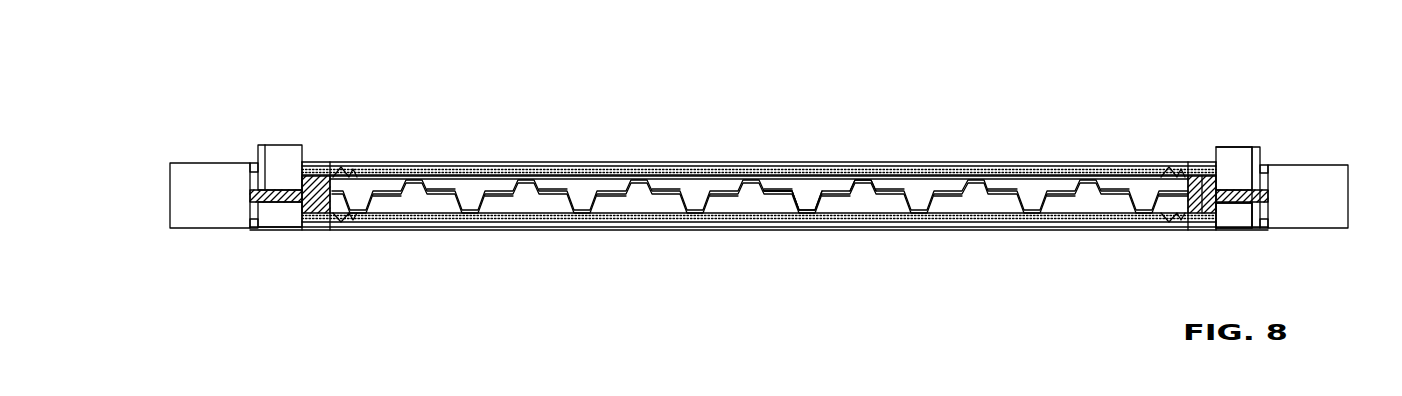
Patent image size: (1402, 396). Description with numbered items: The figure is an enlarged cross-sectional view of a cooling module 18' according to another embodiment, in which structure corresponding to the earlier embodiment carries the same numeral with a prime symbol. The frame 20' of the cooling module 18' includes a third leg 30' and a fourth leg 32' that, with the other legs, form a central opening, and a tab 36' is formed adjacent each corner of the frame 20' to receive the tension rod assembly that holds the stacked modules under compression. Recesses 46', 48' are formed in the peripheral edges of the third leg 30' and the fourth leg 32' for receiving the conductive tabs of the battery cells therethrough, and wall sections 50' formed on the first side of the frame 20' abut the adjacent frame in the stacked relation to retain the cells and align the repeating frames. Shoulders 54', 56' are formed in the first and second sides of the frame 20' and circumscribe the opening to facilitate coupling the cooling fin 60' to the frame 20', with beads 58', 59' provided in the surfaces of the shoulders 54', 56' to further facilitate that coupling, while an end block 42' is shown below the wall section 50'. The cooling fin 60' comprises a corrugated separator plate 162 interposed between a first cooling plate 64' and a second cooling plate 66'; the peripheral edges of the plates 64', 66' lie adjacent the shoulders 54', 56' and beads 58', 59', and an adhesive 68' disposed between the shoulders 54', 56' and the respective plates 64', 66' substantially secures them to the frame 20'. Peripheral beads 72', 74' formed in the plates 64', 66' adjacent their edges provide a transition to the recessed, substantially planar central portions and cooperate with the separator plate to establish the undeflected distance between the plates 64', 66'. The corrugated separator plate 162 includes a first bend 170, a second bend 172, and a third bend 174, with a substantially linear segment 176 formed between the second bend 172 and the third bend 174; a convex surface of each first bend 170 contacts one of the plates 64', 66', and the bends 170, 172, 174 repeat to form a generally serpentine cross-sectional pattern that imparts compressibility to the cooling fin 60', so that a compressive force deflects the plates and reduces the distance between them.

The cooling module 18' is at (810, 131).
The frame 20' is at (1236, 117).
The third leg 30' is at (240, 199).
The fourth leg 32' is at (1280, 199).
The tab 36' is at (769, 172).
The lower end block 42' is at (1236, 237).
The recess 46' is at (769, 151).
The recess 48' is at (762, 249).
The wall section 50' is at (772, 164).
The shoulder 54' is at (1202, 183).
The shoulder 56' is at (1203, 227).
The bead 58' is at (1171, 152).
The bead 59' is at (1168, 245).
The cooling fin 60' is at (759, 143).
The first cooling plate 64' is at (759, 152).
The second cooling plate 66' is at (759, 246).
The adhesive 68' is at (317, 206).
The peripheral bead 72' is at (366, 151).
The peripheral bead 74' is at (365, 245).
The corrugated separator plate 162 is at (433, 190).
The first bend 170 is at (808, 206).
The second bend 172 is at (774, 190).
The third bend 174 is at (850, 184).
The substantially linear segment 176 is at (786, 192).